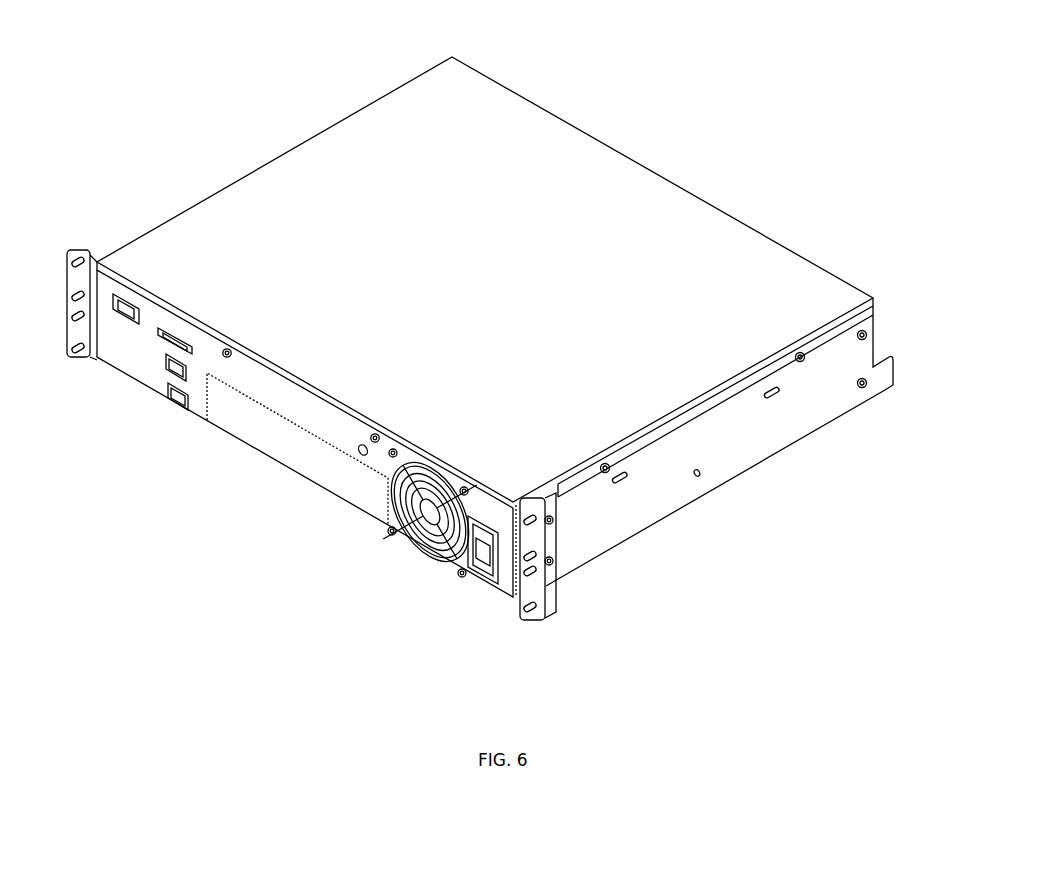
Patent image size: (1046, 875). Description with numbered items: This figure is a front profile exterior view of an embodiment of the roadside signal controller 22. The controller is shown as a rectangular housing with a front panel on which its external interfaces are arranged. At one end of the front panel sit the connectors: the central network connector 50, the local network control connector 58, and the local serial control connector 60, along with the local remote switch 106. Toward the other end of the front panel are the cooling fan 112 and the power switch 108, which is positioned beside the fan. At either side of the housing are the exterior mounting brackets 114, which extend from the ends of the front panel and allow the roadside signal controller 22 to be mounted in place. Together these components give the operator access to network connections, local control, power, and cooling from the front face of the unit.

The roadside signal controller 22 is at (135, 80).
The exterior mounting brackets 114 is at (75, 277).
The local remote switch 106 is at (122, 313).
The local serial control connector 60 is at (183, 347).
The local network control connector 58 is at (173, 367).
The central network connector 50 is at (177, 401).
The cooling fan 112 is at (392, 532).
The power switch 108 is at (480, 562).